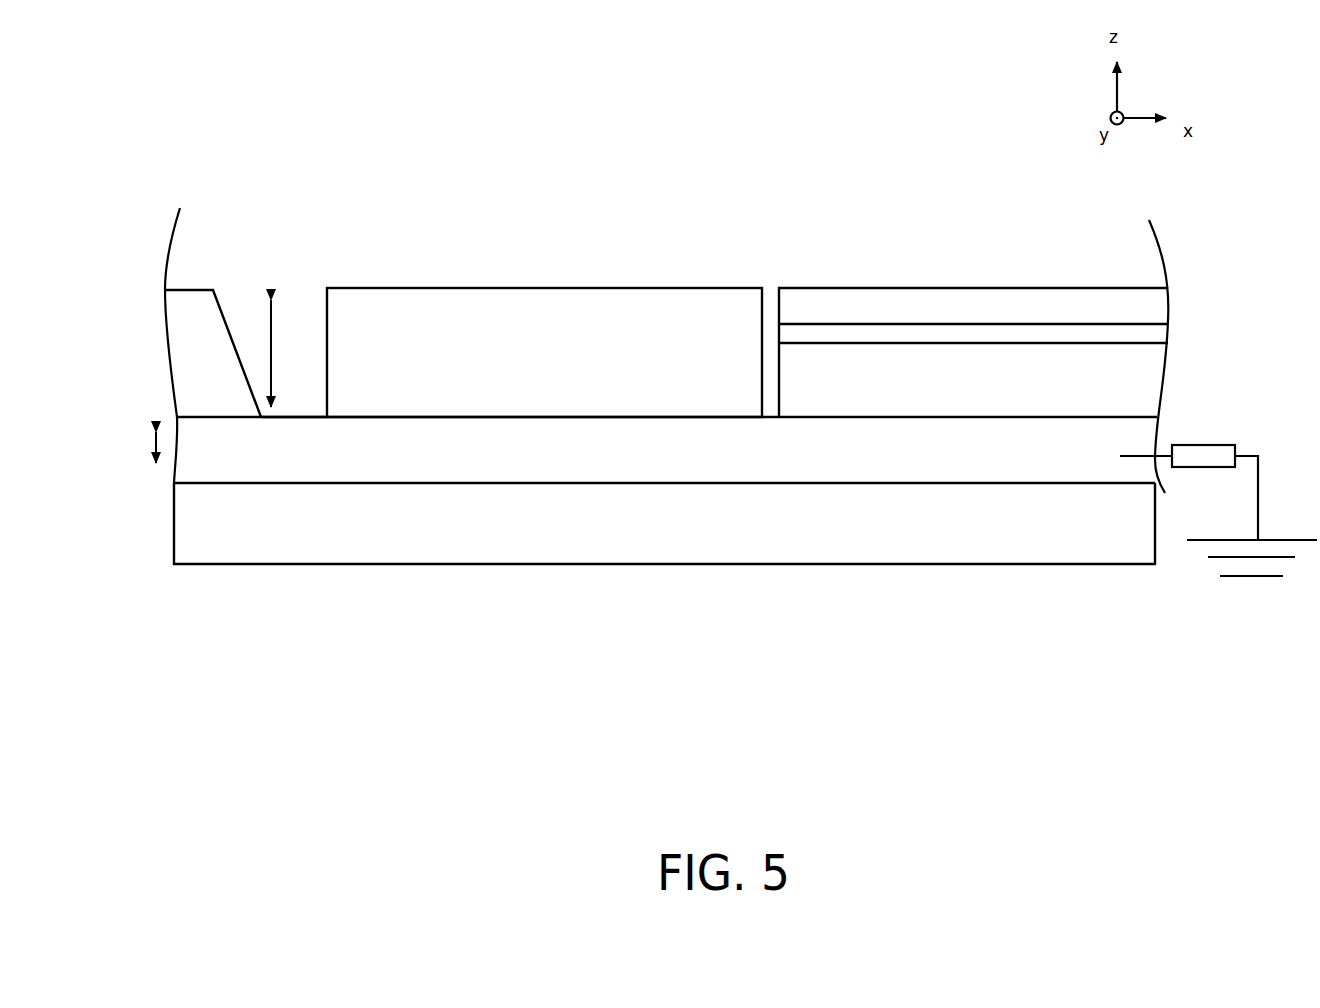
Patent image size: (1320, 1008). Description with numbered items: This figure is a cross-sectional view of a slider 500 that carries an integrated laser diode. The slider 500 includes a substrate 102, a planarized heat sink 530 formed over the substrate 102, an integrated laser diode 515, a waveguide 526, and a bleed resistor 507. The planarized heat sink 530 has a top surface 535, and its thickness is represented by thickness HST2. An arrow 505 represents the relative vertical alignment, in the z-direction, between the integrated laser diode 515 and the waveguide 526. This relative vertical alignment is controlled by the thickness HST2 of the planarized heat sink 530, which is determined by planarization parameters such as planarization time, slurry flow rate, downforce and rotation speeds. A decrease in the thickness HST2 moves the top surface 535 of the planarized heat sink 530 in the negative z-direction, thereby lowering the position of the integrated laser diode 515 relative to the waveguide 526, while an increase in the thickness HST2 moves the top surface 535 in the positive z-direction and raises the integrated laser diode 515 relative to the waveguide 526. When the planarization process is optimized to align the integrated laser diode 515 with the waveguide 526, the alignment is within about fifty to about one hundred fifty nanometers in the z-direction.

The slider 500 is at (275, 147).
The substrate 102 is at (518, 515).
The planarized heat sink 530 is at (217, 462).
The arrow 505 is at (270, 342).
The top surface of planarized heat sink 535 is at (315, 415).
The integrated laser diode 515 is at (445, 298).
The waveguide 526 is at (970, 333).
The bleed resistor 507 is at (1197, 450).
The thickness HST2 is at (120, 447).